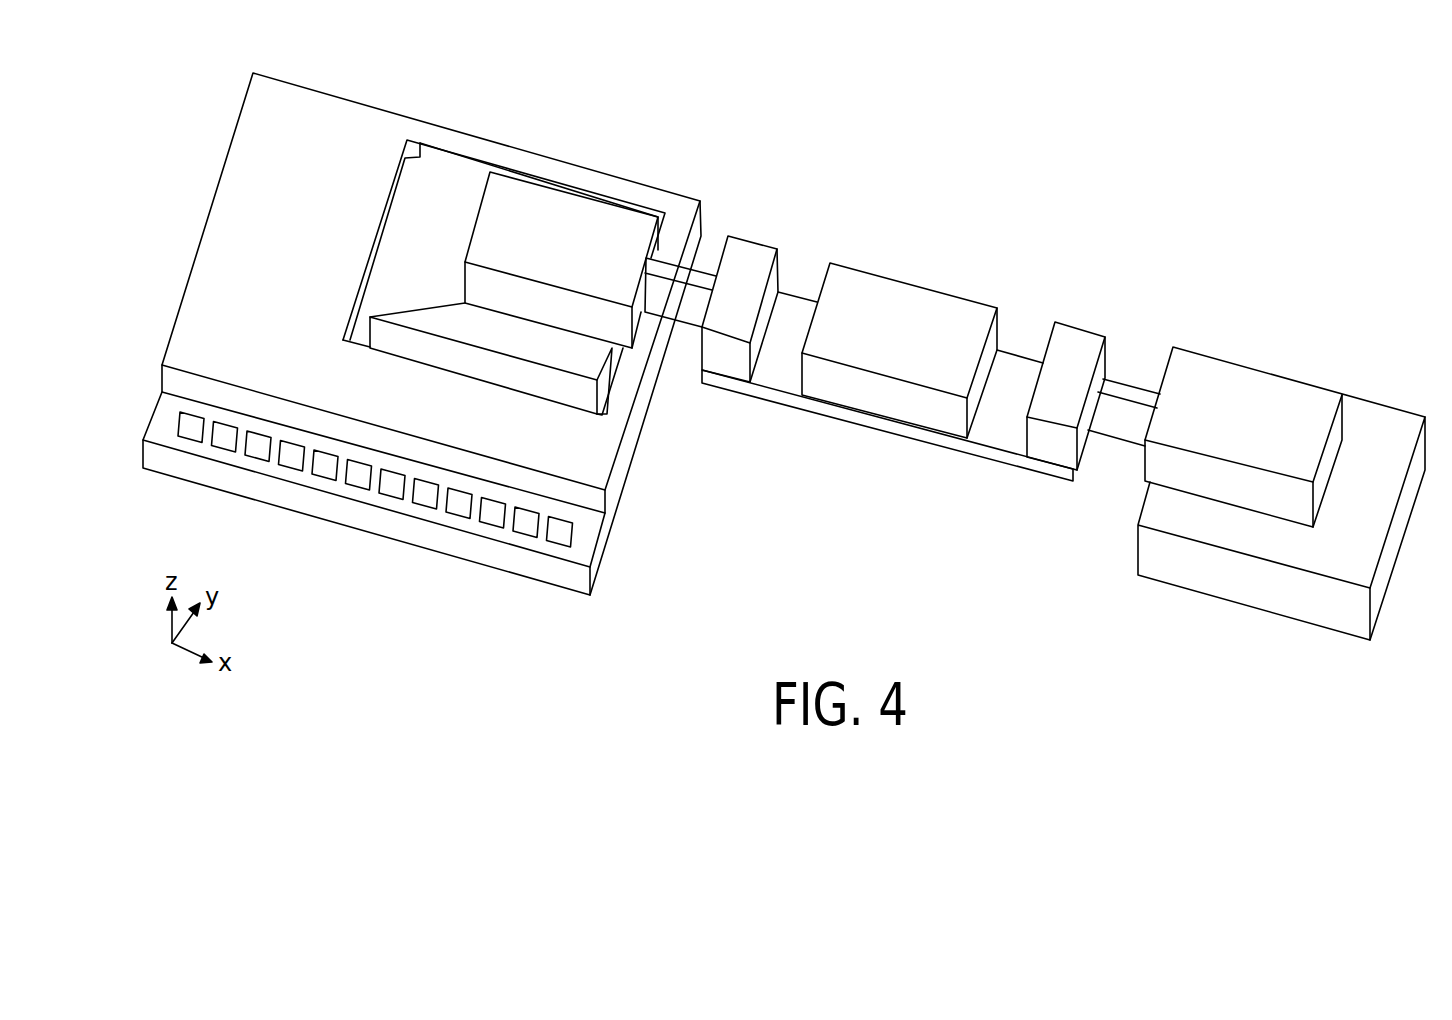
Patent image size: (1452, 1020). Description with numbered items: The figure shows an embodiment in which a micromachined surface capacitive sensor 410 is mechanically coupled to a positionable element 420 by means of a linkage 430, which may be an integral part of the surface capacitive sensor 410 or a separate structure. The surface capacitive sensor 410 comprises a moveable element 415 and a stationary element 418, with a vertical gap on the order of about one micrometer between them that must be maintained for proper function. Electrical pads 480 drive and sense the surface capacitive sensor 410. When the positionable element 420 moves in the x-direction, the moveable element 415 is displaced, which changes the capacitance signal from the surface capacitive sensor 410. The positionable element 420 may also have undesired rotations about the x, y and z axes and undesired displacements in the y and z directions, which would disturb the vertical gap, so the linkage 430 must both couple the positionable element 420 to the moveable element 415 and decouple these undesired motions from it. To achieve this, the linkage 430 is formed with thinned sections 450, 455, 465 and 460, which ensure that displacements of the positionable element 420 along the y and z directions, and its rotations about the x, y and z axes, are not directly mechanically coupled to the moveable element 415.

The micromachined surface capacitive sensor 410 is at (419, 317).
The stationary element 418 is at (332, 123).
The moveable element 415 is at (452, 175).
The electrical pads 480 is at (328, 463).
The thinned section 455 is at (695, 297).
The linkage 430 is at (932, 351).
The thinned section 450 is at (782, 362).
The thinned section 460 is at (1019, 368).
The thinned section 465 is at (1132, 393).
The positionable element 420 is at (1375, 428).